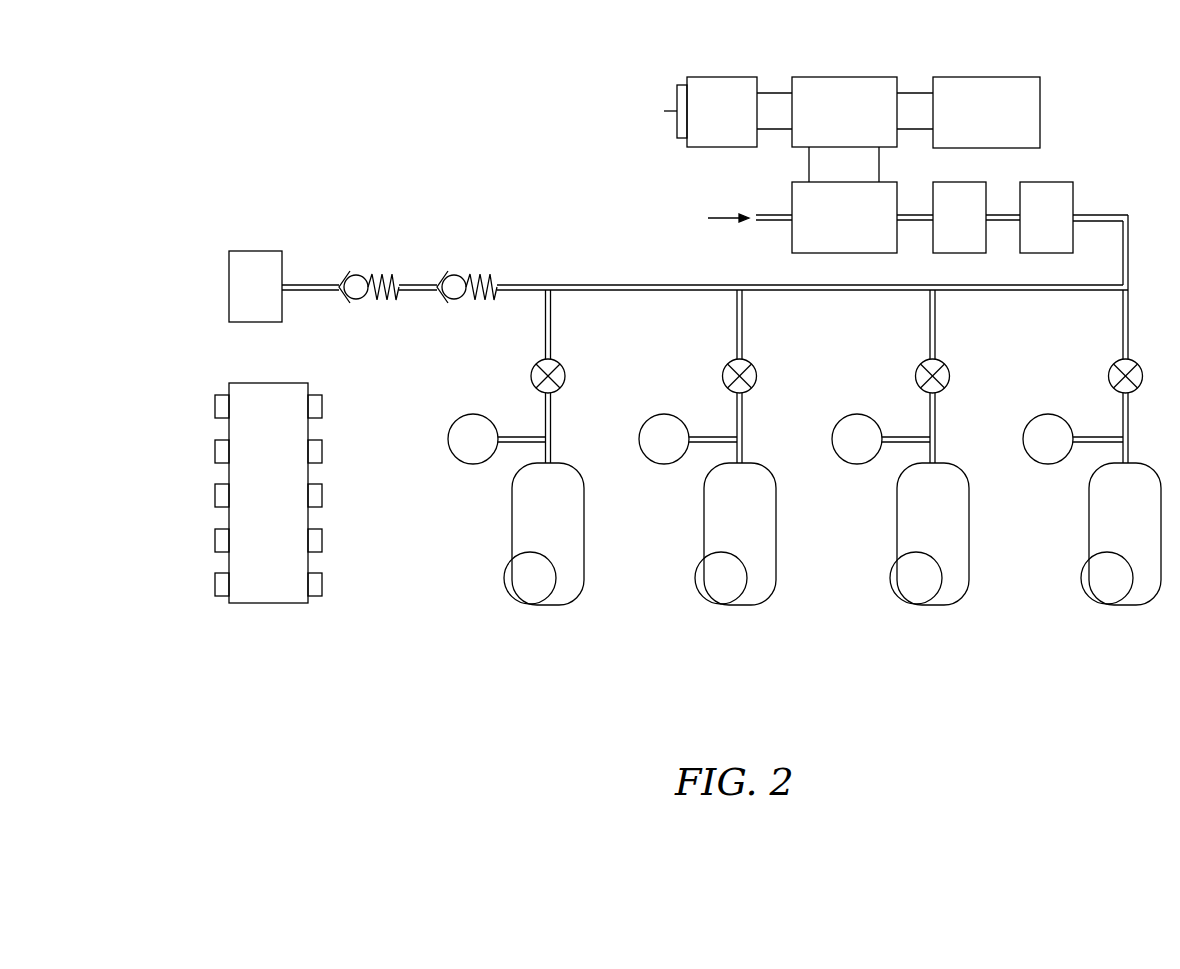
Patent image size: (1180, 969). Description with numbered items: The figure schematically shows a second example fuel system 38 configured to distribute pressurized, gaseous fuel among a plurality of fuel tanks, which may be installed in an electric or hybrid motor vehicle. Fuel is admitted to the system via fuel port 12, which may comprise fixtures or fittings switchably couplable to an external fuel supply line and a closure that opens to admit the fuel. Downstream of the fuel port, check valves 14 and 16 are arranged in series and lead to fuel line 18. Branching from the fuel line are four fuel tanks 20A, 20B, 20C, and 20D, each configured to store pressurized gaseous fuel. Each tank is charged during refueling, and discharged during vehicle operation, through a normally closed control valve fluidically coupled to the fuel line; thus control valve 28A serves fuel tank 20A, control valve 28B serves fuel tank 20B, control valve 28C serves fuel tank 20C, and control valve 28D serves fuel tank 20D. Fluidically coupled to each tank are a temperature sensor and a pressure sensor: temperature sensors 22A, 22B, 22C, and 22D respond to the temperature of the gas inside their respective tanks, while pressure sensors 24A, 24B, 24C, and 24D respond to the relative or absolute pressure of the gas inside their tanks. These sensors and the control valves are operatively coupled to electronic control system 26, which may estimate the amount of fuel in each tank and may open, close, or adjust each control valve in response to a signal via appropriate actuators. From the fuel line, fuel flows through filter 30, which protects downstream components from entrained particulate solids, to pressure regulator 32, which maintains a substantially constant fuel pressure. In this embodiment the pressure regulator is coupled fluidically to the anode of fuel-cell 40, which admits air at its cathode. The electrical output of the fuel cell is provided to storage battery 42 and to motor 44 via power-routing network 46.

The fuel system 38 is at (256, 105).
The fuel port 12 is at (266, 296).
The check valve 14 is at (367, 233).
The check valve 16 is at (464, 233).
The fuel line 18 is at (648, 285).
The electronic control system 26 is at (279, 503).
The control valve 28A is at (533, 372).
The control valve 28B is at (724, 372).
The control valve 28C is at (917, 372).
The control valve 28D is at (1110, 372).
The pressure sensor 24A is at (457, 449).
The pressure sensor 24B is at (648, 449).
The pressure sensor 24C is at (841, 449).
The pressure sensor 24D is at (1032, 449).
The fuel tank 20A is at (531, 545).
The fuel tank 20B is at (723, 545).
The fuel tank 20C is at (916, 545).
The fuel tank 20D is at (1108, 545).
The temperature sensor 22A is at (514, 588).
The temperature sensor 22B is at (705, 588).
The temperature sensor 22C is at (900, 588).
The temperature sensor 22D is at (1091, 588).
The fuel-cell 40 is at (833, 227).
The pressure regulator 32 is at (948, 227).
The filter 30 is at (1035, 227).
The motor 44 is at (709, 121).
The power-routing network 46 is at (833, 121).
The storage battery 42 is at (977, 121).